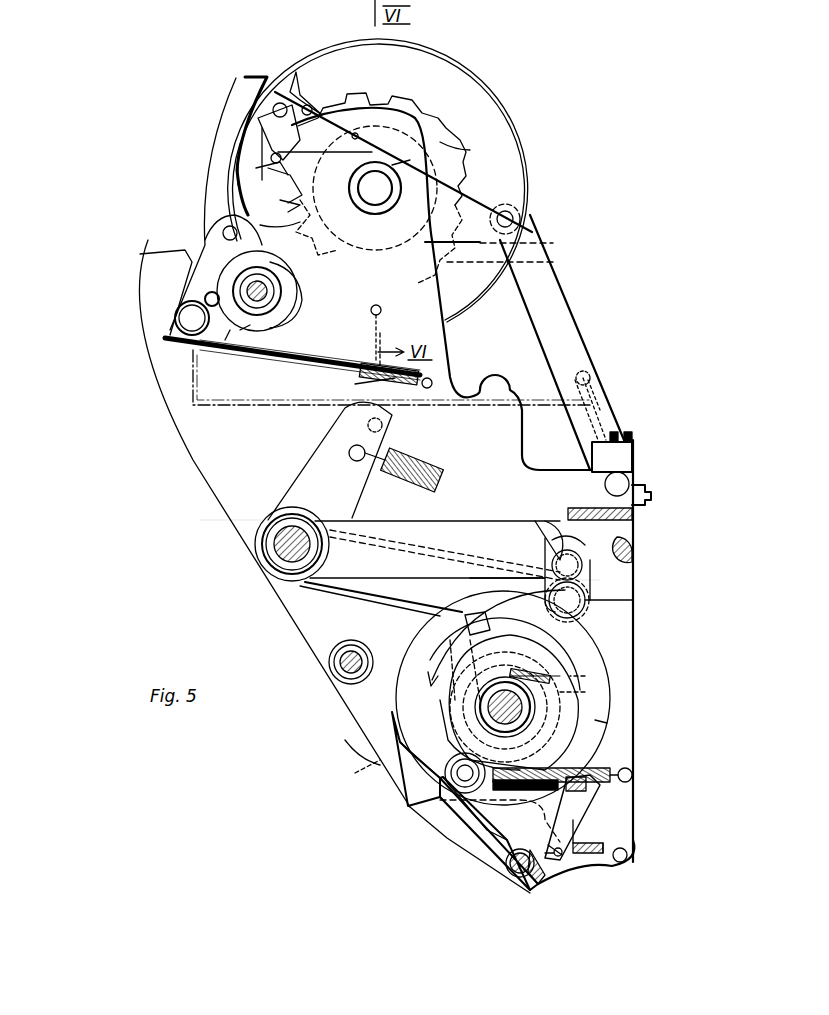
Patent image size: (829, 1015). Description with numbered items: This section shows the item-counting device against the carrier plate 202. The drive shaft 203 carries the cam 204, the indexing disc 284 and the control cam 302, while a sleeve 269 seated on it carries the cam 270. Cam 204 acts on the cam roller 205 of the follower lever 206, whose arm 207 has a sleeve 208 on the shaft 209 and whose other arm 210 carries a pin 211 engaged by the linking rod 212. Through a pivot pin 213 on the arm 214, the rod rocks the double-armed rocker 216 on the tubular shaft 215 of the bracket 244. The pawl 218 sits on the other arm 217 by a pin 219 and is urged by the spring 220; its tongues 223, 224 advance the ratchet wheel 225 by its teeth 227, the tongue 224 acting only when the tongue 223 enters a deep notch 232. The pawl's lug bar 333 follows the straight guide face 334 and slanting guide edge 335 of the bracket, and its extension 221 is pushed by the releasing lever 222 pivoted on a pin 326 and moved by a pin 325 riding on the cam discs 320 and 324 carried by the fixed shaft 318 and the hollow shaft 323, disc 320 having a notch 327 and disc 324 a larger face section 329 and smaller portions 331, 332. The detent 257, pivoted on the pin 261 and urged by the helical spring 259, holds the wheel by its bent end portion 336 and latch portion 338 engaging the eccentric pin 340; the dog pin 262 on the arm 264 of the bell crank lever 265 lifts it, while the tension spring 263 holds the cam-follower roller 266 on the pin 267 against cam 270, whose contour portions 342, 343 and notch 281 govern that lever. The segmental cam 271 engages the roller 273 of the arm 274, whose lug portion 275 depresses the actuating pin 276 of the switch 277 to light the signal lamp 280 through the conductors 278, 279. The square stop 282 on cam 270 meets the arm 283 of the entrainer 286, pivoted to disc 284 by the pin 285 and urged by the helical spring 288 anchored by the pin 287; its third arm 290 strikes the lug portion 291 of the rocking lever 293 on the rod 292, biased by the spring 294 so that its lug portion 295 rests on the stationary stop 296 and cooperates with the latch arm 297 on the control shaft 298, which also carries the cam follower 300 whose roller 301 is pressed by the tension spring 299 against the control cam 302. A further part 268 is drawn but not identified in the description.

The frame plate 202 is at (357, 723).
The shaft 203 is at (545, 722).
The plate portion 204 is at (405, 762).
The roller 205 is at (575, 620).
The guide 206 is at (590, 580).
The arm edge 207 is at (355, 593).
The lever arm 208 is at (275, 560).
The pivot pin 209 is at (270, 553).
The bearing 210 is at (625, 504).
The stop member 211 is at (646, 490).
The frame member 212 is at (555, 330).
The pin 213 is at (513, 219).
The bushing 214 is at (518, 207).
The plate 215 is at (430, 150).
The plate 216 is at (430, 185).
The pin 217 is at (307, 118).
The pin 218 is at (273, 103).
The brake band 219 is at (262, 100).
The pawl 220 is at (282, 145).
The pawl tip 221 is at (302, 72).
The pawl edge 222 is at (240, 160).
The pivot 223 is at (283, 176).
The pawl edge 224 is at (235, 168).
The ratchet plate 225 is at (382, 177).
The ratchet wheel 227 is at (355, 108).
The arm 232 is at (448, 148).
The drum 244 is at (378, 180).
The spring seat 257 is at (375, 378).
The spring 259 is at (412, 368).
The pin 261 is at (370, 311).
The pivot hole 262 is at (347, 430).
The spring 263 is at (410, 462).
The lever 264 is at (292, 486).
The arm edge 265 is at (395, 600).
The guide 266 is at (620, 615).
The hole 267 is at (592, 596).
The cover outline 268 is at (600, 748).
The key 269 is at (548, 707).
The wheel 270 is at (608, 690).
The lever 271 is at (605, 785).
The bracket 273 is at (588, 563).
The edge 274 is at (300, 602).
The bar 275 is at (572, 500).
The roller 276 is at (630, 471).
The block 277 is at (615, 448).
The cover outline 278 is at (193, 390).
The cover outline 279 is at (193, 403).
The roller 280 is at (185, 318).
The arc 281 is at (540, 650).
The cam 282 is at (513, 702).
The rotation arrow 283 is at (486, 638).
The cam follower 284 is at (455, 700).
The bracket 285 is at (432, 615).
The arm edge 286 is at (505, 578).
The line 287 is at (585, 692).
The line 288 is at (585, 678).
The arm end 290 is at (548, 562).
The wedge 291 is at (470, 832).
The pin 292 is at (520, 870).
The wedge 293 is at (483, 838).
The pin 294 is at (546, 864).
The pad 295 is at (567, 852).
The hole 296 is at (612, 828).
The pin 297 is at (559, 868).
The roller 298 is at (340, 672).
The spring 299 is at (632, 776).
The edge 300 is at (352, 750).
The plate edge 301 is at (440, 797).
The roller 302 is at (455, 767).
The pawl 318 is at (274, 234).
The rack 320 is at (285, 325).
The pawl 323 is at (300, 228).
The lever 324 is at (246, 328).
The pin 325 is at (205, 299).
The hole 326 is at (222, 233).
The plate edge 327 is at (190, 335).
The bracket 329 is at (250, 257).
The pulley 331 is at (292, 290).
The lever 332 is at (230, 332).
The link 333 is at (262, 163).
The link 334 is at (270, 172).
The link 335 is at (285, 195).
The line 336 is at (542, 265).
The line 338 is at (531, 243).
The hub 340 is at (399, 201).
The edge 342 is at (607, 723).
The line 343 is at (355, 773).